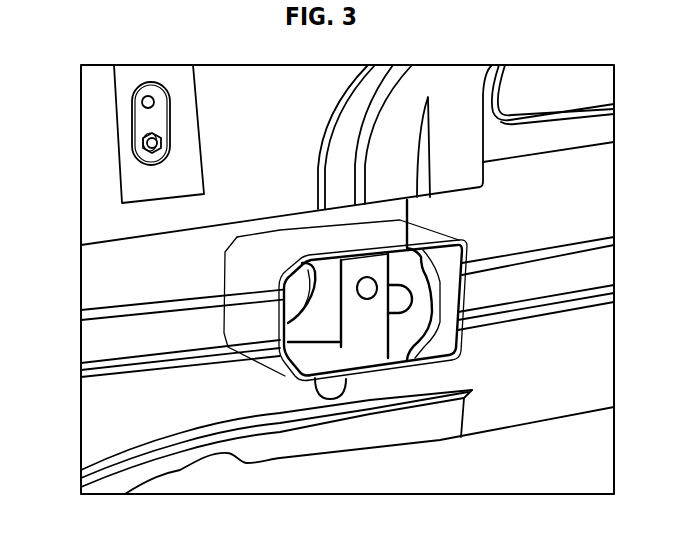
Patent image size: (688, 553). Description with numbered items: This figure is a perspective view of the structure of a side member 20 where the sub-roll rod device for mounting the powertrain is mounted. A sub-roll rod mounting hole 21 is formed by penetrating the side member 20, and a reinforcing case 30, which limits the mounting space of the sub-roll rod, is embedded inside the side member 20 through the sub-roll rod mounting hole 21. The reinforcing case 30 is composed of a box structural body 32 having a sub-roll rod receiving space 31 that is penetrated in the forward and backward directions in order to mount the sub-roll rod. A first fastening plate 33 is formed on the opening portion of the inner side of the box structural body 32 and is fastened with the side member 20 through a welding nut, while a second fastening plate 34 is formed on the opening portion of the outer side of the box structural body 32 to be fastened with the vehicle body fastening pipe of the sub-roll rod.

The side member 20 is at (504, 427).
The sub-roll rod mounting hole 21 is at (305, 374).
The reinforcing case 30 is at (357, 377).
The sub-roll rod receiving space 31 is at (323, 367).
The box structural body 32 is at (242, 260).
The first fastening plate 33 is at (410, 327).
The second fastening plate 34 is at (358, 335).